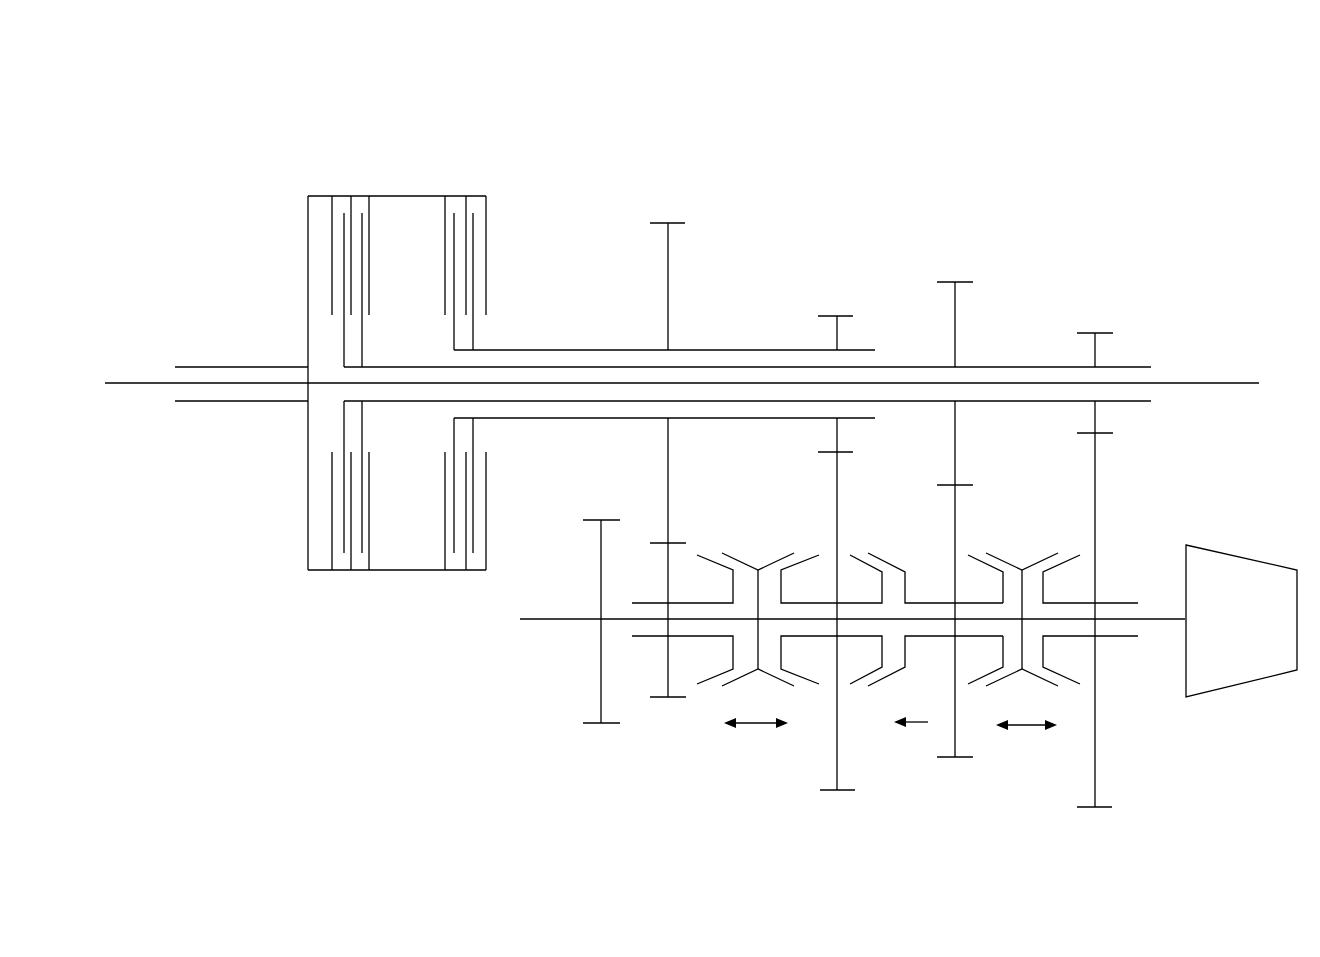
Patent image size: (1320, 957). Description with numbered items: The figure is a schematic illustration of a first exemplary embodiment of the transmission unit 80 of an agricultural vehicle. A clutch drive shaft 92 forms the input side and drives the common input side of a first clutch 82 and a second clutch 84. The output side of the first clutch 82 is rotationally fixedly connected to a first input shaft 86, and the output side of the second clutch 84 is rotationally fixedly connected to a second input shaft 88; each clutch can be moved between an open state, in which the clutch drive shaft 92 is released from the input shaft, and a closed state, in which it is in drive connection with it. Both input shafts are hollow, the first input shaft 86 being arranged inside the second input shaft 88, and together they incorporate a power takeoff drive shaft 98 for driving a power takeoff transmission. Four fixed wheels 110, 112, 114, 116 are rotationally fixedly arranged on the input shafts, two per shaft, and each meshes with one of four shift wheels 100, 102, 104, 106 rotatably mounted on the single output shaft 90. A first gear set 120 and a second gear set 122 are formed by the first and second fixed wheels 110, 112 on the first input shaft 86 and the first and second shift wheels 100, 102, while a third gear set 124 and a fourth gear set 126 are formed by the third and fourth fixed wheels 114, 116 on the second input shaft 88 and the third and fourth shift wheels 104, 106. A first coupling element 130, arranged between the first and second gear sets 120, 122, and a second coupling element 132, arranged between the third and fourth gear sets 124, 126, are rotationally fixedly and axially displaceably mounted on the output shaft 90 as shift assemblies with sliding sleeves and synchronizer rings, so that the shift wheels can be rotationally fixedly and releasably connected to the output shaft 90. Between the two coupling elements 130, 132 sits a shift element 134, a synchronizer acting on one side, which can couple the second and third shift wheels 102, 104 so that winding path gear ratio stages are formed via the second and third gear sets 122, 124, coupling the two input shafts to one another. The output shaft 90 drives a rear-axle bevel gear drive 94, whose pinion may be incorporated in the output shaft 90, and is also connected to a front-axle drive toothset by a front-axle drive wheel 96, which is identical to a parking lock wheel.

The transmission unit 80 is at (208, 133).
The first clutch 82 is at (466, 586).
The second clutch 84 is at (344, 586).
The first input shaft 86 is at (569, 350).
The second input shaft 88 is at (530, 366).
The output shaft 90 is at (1156, 619).
The clutch drive shaft 92 is at (234, 366).
The rear-axle bevel gear drive 94 is at (1258, 607).
The front-axle drive wheel 96 is at (565, 718).
The power takeoff drive shaft 98 is at (1205, 383).
The first shift wheel 100 is at (666, 697).
The second shift wheel 102 is at (835, 791).
The third shift wheel 104 is at (955, 758).
The fourth shift wheel 106 is at (1097, 782).
The first fixed wheel 110 is at (688, 308).
The second fixed wheel 112 is at (845, 309).
The third fixed wheel 114 is at (964, 307).
The fourth fixed wheel 116 is at (1108, 306).
The first gear set 120 is at (661, 190).
The second gear set 122 is at (825, 277).
The third gear set 124 is at (944, 255).
The fourth gear set 126 is at (1090, 305).
The first coupling element 130 is at (758, 539).
The second coupling element 132 is at (1028, 539).
The shift element 134 is at (890, 532).